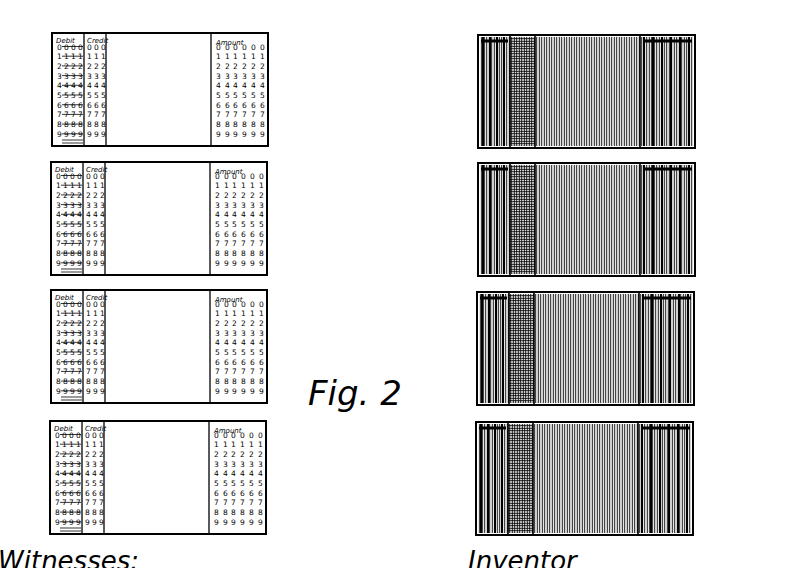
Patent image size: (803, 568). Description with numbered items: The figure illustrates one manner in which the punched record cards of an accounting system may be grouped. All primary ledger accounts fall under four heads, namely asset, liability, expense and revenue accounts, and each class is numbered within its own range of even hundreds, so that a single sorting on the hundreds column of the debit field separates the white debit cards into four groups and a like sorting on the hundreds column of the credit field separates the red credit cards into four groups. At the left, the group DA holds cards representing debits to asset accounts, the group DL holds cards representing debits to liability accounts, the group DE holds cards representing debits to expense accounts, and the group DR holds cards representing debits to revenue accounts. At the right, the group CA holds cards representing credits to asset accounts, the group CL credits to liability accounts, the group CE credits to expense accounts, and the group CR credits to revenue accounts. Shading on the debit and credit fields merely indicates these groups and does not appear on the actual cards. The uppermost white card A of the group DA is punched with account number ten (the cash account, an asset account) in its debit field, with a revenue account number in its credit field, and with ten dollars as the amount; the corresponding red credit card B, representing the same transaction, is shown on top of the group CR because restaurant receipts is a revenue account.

The white debit card A is at (121, 44).
The red credit card B is at (692, 462).
The debit asset card group DA is at (140, 89).
The debit liability card group DL is at (141, 218).
The debit expense card group DE is at (141, 346).
The debit revenue card group DR is at (139, 477).
The credit asset card group CA is at (570, 91).
The credit liability card group CL is at (568, 219).
The credit expense card group CE is at (568, 348).
The credit revenue card group CR is at (565, 478).